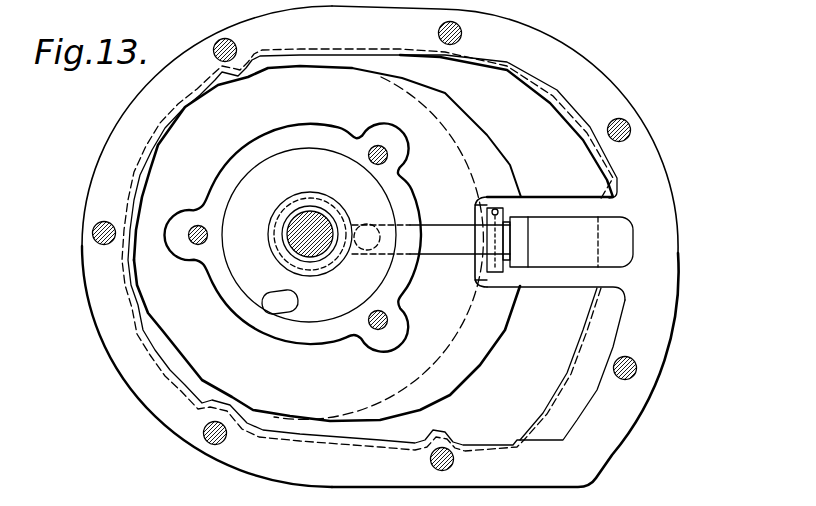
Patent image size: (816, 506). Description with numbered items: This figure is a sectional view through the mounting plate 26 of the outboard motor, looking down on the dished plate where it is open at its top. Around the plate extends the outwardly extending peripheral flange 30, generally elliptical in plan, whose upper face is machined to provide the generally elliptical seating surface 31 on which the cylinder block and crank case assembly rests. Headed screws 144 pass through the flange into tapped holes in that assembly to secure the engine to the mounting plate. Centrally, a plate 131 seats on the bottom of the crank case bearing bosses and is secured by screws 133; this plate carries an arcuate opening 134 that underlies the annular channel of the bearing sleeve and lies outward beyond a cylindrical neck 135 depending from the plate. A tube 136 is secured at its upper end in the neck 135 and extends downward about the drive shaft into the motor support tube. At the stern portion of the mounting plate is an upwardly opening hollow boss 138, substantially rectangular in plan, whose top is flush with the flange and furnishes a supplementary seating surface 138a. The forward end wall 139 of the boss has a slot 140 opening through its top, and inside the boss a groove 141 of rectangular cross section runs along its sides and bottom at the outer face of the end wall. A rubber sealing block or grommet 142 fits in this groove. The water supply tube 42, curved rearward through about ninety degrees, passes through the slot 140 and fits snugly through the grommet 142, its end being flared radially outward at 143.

The mounting plate 26 is at (165, 168).
The peripheral flange 30 is at (122, 124).
The seating surface 31 is at (167, 408).
The water supply tube 42 is at (435, 233).
The plate 131 is at (262, 163).
The screws 133 is at (379, 147).
The arcuate opening 134 is at (277, 310).
The cylindrical neck 135 is at (315, 274).
The tube 136 is at (287, 256).
The hollow boss 138 is at (553, 203).
The seating surface 138a is at (552, 283).
The end wall 139 is at (476, 268).
The slot 140 is at (478, 222).
The groove 141 is at (495, 209).
The sealing block or grommet 142 is at (497, 272).
The flared end 143 is at (512, 247).
The headed screws 144 is at (218, 40).